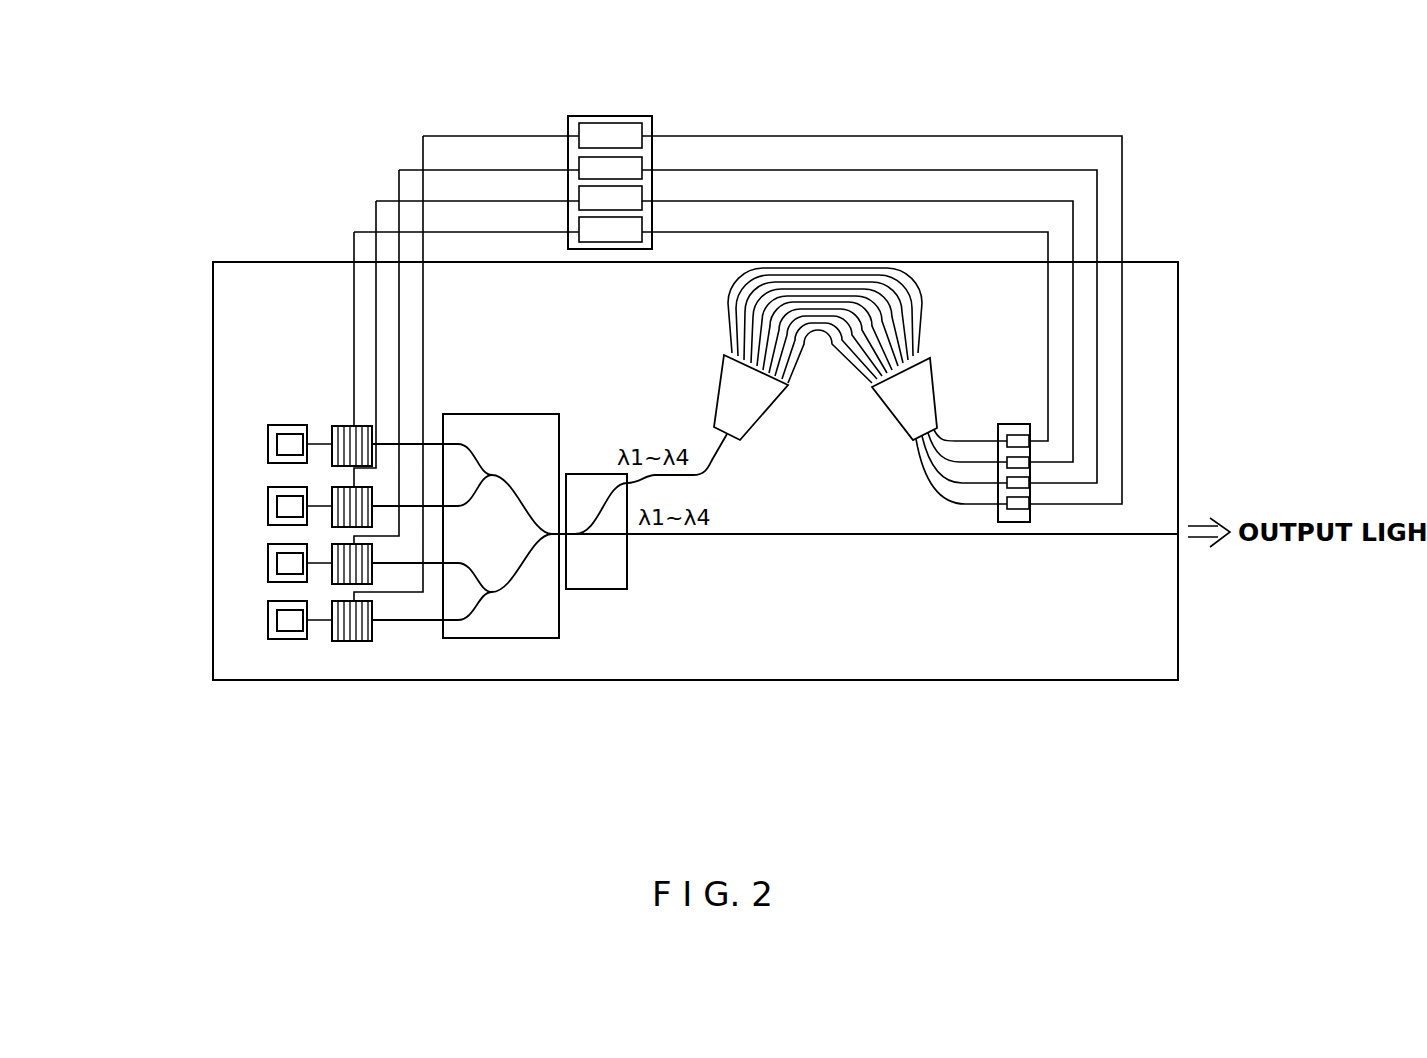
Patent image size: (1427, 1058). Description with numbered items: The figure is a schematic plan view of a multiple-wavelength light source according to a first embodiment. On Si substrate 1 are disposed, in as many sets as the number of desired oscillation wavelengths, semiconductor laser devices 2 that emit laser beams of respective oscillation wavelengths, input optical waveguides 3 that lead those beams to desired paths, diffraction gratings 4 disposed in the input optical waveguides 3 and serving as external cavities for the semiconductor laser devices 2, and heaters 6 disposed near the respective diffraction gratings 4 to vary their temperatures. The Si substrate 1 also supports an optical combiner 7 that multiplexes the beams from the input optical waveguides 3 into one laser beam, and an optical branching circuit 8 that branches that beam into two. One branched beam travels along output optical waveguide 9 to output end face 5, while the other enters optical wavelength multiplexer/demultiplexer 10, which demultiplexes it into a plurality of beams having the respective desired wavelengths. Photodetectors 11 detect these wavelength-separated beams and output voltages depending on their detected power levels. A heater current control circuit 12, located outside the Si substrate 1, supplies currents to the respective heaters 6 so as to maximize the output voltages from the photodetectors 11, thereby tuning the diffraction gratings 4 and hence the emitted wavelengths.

The Si substrate 1 is at (255, 700).
The semiconductor laser device 2 is at (268, 442).
The input optical waveguide 3 is at (282, 388).
The diffraction grating 4 is at (345, 452).
The output end face 5 is at (1178, 668).
The heater 6 is at (348, 468).
The optical combiner 7 is at (463, 640).
The optical branching circuit 8 is at (610, 590).
The output optical waveguide 9 is at (1033, 535).
The optical wavelength multiplexer/demultiplexer 10 is at (826, 359).
The photodetector 11 is at (1030, 431).
The heater current control circuit 12 is at (598, 117).